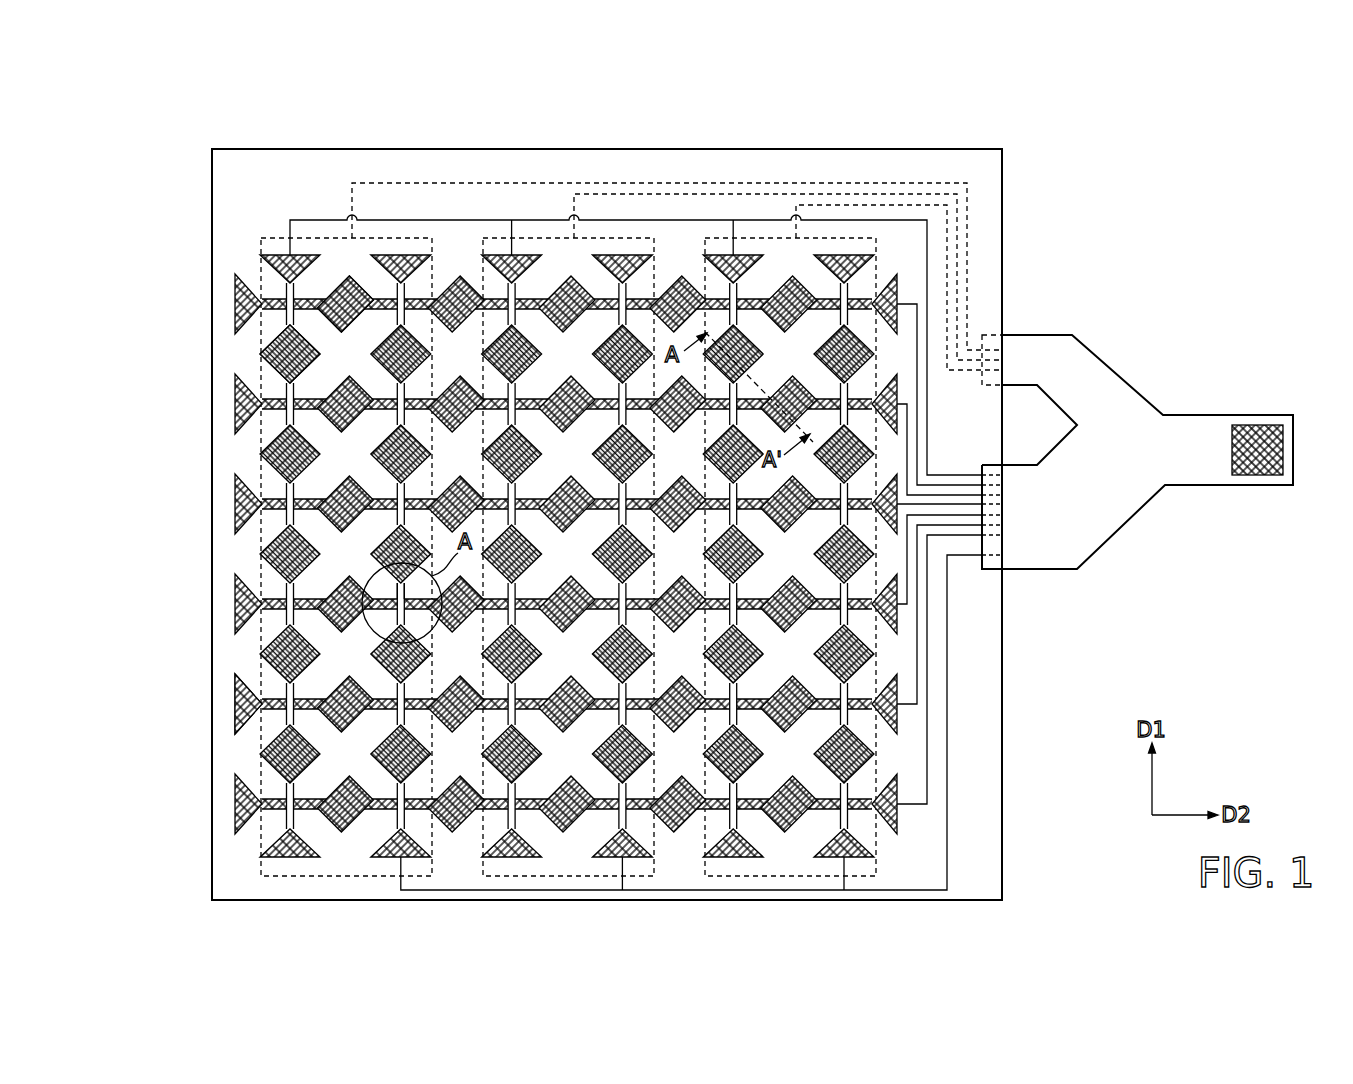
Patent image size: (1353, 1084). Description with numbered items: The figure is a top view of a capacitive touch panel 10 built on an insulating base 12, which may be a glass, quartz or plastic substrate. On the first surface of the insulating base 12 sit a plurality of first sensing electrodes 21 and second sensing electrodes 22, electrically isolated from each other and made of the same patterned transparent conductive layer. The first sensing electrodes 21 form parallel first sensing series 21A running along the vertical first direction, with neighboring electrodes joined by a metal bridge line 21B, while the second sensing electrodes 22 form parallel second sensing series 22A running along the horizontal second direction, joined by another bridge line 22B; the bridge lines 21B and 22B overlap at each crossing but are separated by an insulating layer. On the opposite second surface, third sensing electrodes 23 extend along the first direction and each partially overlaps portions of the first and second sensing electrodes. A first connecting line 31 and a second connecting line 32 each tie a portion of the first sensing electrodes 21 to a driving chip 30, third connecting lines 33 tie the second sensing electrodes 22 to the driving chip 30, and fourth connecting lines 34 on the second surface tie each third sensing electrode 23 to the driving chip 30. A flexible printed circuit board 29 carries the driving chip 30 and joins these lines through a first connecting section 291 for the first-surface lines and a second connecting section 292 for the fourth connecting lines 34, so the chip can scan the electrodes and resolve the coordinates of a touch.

The touch panel 10 is at (740, 499).
The insulating base 12 is at (1003, 209).
The first sensing electrode 21 is at (264, 348).
The first sensing series 21A is at (508, 476).
The bridge line 21B is at (289, 519).
The second sensing electrode 22 is at (338, 297).
The second sensing series 22A is at (520, 530).
The bridge line 22B is at (275, 700).
The third sensing electrode 23 is at (272, 427).
The flexible printed circuit board 29 is at (1196, 412).
The driving chip 30 is at (1258, 425).
The first connecting line 31 is at (308, 218).
The second connecting line 32 is at (948, 836).
The third connecting line 33 is at (908, 436).
The fourth connecting line 34 is at (472, 183).
The first connecting section 291 is at (1028, 570).
The second connecting section 292 is at (1020, 335).